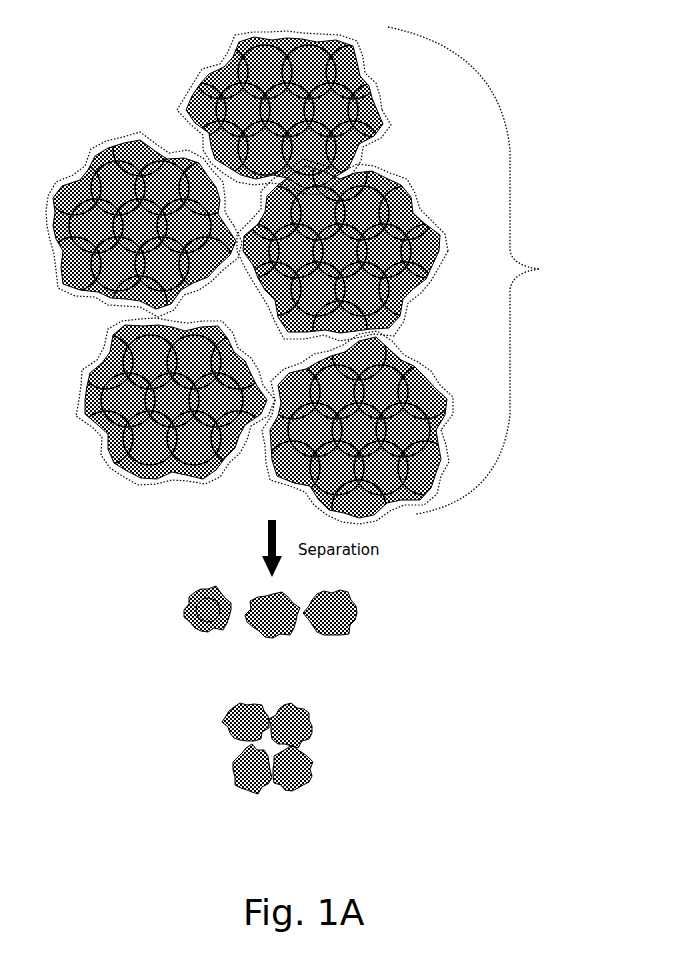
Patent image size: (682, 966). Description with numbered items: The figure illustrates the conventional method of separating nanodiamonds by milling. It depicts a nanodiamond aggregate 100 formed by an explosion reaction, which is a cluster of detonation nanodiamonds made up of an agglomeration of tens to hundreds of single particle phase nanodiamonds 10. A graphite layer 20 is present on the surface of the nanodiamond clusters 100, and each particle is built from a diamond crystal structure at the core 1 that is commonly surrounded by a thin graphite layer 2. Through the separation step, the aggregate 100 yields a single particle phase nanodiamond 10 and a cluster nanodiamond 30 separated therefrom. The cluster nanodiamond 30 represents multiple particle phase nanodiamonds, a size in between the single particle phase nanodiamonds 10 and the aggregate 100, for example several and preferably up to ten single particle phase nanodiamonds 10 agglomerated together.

The nanodiamond aggregate 100 is at (302, 413).
The graphite layer 20 is at (82, 351).
The single particle phase nanodiamond 10 is at (86, 373).
The core 1 is at (196, 600).
The thin graphite layer 2 is at (198, 628).
The cluster nanodiamond 30 is at (312, 708).